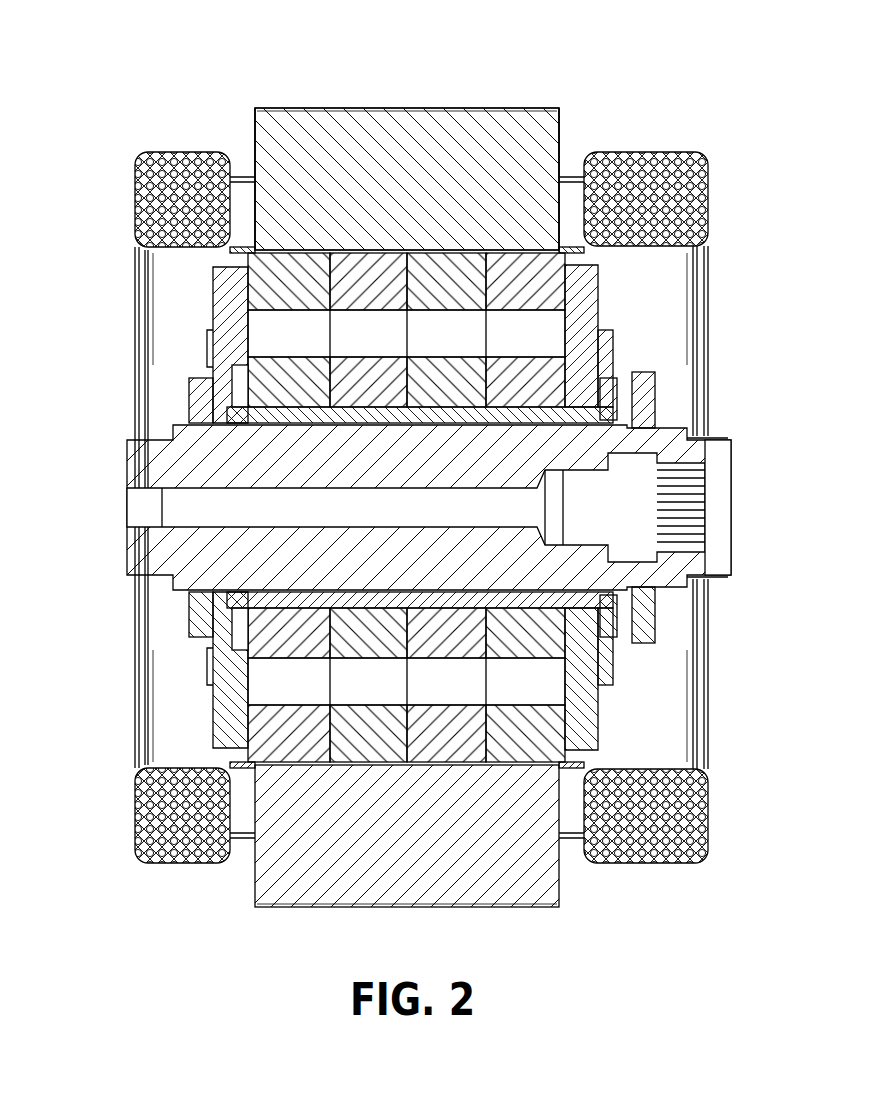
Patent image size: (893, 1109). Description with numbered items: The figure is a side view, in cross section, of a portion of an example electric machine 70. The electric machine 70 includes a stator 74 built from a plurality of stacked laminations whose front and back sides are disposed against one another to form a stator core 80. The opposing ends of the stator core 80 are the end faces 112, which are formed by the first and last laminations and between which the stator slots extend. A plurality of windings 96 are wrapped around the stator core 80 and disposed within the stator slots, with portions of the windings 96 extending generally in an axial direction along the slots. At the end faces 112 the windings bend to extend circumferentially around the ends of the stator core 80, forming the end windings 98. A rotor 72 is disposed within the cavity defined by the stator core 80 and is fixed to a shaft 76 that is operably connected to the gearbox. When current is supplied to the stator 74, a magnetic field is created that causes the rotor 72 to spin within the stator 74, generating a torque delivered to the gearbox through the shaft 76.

The electric machine 70 is at (213, 70).
The rotor 72 is at (525, 280).
The stator 74 is at (330, 108).
The shaft 76 is at (728, 438).
The stator core 80 is at (440, 108).
The windings 96 is at (243, 820).
The end windings 98 is at (706, 156).
The end faces 112 is at (255, 145).